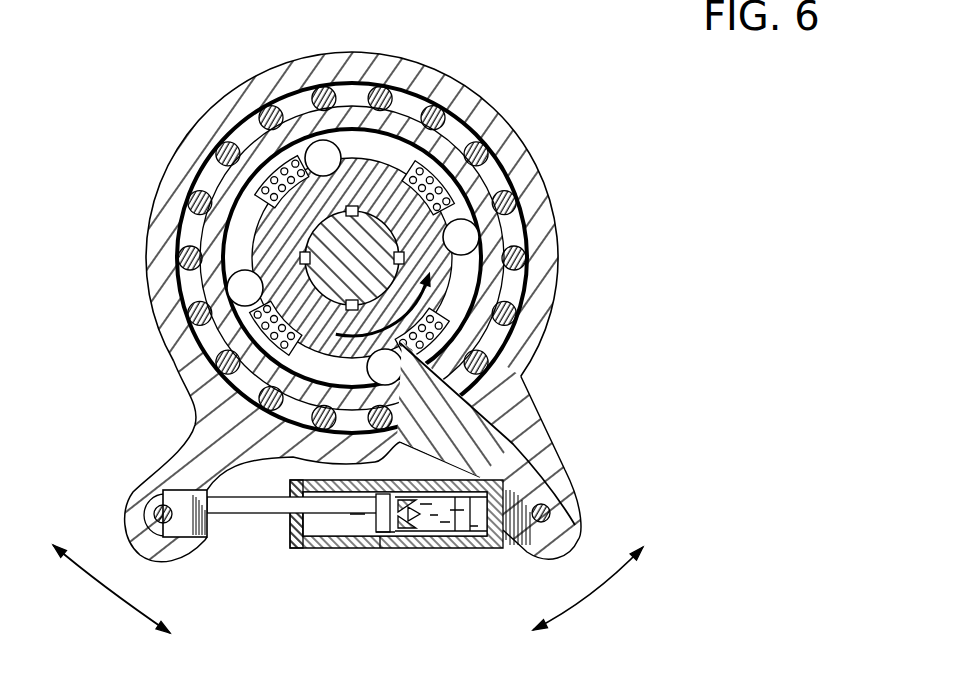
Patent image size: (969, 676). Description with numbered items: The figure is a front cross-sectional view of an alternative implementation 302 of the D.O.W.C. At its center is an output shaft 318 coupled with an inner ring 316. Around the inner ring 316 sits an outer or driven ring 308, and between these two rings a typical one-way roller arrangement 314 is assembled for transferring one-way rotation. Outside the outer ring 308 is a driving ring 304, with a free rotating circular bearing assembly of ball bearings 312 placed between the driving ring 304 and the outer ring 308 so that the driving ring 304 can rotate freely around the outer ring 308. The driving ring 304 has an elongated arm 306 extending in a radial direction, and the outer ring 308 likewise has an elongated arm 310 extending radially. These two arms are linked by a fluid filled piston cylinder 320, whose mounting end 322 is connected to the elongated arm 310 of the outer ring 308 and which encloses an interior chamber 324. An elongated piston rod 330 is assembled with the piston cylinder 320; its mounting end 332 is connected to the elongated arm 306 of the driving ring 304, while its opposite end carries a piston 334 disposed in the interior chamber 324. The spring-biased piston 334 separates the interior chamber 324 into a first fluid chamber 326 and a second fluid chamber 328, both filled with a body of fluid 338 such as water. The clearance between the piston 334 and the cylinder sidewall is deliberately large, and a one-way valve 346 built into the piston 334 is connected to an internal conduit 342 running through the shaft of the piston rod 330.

The alternative implementation of the D.O.W.C. 302 is at (600, 156).
The driving ring 304 is at (282, 80).
The elongated arm 306 is at (205, 422).
The outer or driven ring 308 is at (522, 226).
The elongated arm 310 is at (494, 433).
The ball bearings 312 is at (533, 188).
The one-way roller arrangement 314 is at (246, 187).
The inner ring 316 is at (500, 280).
The output shaft 318 is at (338, 240).
The fluid filled piston cylinder 320 is at (277, 533).
The mounting end 322 is at (560, 520).
The interior chamber 324 is at (478, 500).
The first fluid chamber 326 is at (467, 520).
The second fluid chamber 328 is at (344, 530).
The elongated piston rod 330 is at (304, 506).
The mounting end 332 is at (163, 500).
The piston 334 is at (408, 530).
The body of fluid 338 is at (480, 515).
The internal conduit 342 is at (383, 530).
The one-way valve 346 is at (463, 490).